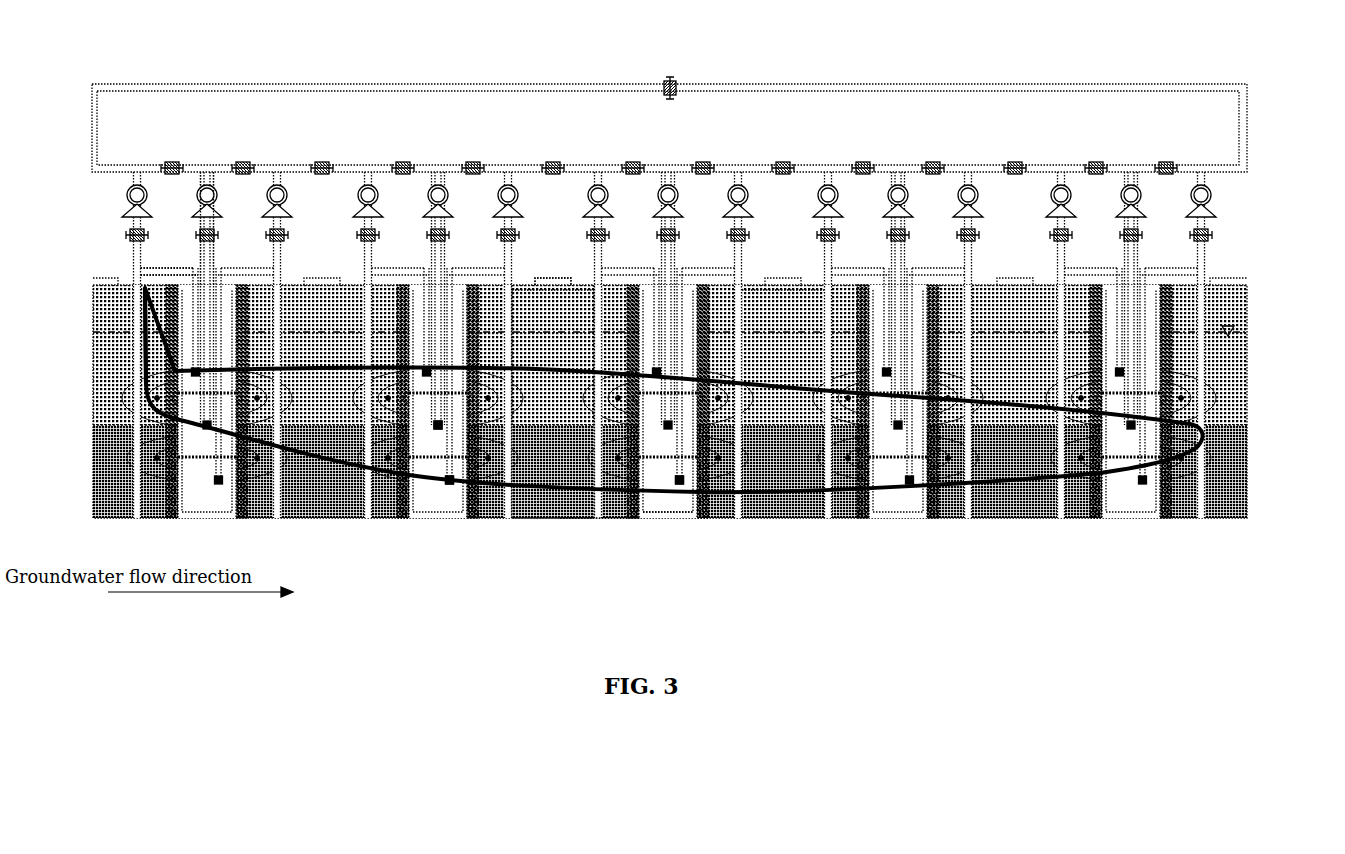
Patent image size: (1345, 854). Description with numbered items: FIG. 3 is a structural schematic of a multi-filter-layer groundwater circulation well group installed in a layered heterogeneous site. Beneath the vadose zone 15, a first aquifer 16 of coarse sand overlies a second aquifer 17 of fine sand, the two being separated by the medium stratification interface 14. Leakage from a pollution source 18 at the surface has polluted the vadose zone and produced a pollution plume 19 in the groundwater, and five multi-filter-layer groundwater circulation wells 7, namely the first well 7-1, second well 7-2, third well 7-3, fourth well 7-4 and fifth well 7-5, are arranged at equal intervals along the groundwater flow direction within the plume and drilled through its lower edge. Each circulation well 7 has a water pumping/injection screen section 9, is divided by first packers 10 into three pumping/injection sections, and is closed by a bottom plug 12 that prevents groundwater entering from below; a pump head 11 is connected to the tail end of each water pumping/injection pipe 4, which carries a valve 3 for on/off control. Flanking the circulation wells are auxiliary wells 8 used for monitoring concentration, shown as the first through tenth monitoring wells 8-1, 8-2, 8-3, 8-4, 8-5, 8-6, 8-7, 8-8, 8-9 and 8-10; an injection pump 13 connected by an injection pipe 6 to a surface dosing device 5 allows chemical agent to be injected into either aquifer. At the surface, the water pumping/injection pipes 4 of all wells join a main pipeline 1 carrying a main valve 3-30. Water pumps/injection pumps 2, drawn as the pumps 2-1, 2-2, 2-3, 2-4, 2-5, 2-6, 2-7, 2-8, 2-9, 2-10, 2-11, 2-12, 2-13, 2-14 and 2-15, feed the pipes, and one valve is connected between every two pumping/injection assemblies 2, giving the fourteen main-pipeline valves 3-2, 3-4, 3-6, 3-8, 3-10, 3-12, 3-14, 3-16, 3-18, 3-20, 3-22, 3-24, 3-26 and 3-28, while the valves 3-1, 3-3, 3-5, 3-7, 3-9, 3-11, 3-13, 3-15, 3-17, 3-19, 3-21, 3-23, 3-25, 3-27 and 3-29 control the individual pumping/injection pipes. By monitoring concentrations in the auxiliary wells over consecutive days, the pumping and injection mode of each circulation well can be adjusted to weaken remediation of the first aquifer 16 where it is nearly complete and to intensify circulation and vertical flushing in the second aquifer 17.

The main pipeline 1 is at (452, 85).
The water pump/injection pump 2 is at (127, 197).
The valve 3 is at (132, 242).
The water pumping/injection pipe 4 is at (212, 258).
The dosing device 5 is at (557, 277).
The injection pipe 6 is at (585, 277).
The multi-filter-layer groundwater circulation well 7 is at (478, 302).
The auxiliary well 8 is at (763, 316).
The water pumping/injection screen section 9 is at (434, 437).
The first packer 10 is at (437, 481).
The pump head 11 is at (666, 473).
The bottom plug 12 is at (660, 522).
The injection pump 13 is at (600, 504).
The medium stratification interface 14 is at (1240, 428).
The vadose zone 15 is at (1245, 308).
The first aquifer 16 is at (1232, 378).
The second aquifer 17 is at (1232, 498).
The pollution source 18 is at (152, 267).
The pollution plume 19 is at (158, 348).
The pump 2-1 is at (154, 201).
The pump 2-2 is at (224, 201).
The pump 2-3 is at (294, 201).
The pump 2-4 is at (385, 201).
The pump 2-5 is at (455, 201).
The pump 2-6 is at (525, 201).
The pump 2-7 is at (615, 201).
The pump 2-8 is at (685, 201).
The pump 2-9 is at (755, 201).
The pump 2-10 is at (852, 201).
The pump 2-11 is at (922, 201).
The pump 2-12 is at (992, 201).
The pump 2-13 is at (1084, 201).
The pump 2-14 is at (1154, 201).
The pump 2-15 is at (1225, 201).
The first valve 3-1 is at (154, 236).
The second valve 3-2 is at (172, 151).
The third valve 3-3 is at (224, 236).
The fourth valve 3-4 is at (243, 151).
The fifth valve 3-5 is at (294, 236).
The sixth valve 3-6 is at (322, 151).
The valve 3-7 is at (385, 236).
The eighth valve 3-8 is at (403, 151).
The valve 3-9 is at (455, 236).
The tenth valve 3-10 is at (475, 151).
The valve 3-11 is at (532, 236).
The twelfth valve 3-12 is at (553, 151).
The valve 3-13 is at (619, 248).
The fourteenth valve 3-14 is at (634, 151).
The valve 3-15 is at (690, 248).
The sixteenth valve 3-16 is at (705, 151).
The valve 3-17 is at (762, 236).
The eighteenth valve 3-18 is at (785, 151).
The valve 3-19 is at (849, 248).
The twentieth valve 3-20 is at (865, 151).
The valve 3-21 is at (920, 248).
The valve 3-22 is at (937, 151).
The valve 3-23 is at (992, 236).
The valve 3-24 is at (1020, 151).
The valve 3-25 is at (1082, 248).
The valve 3-26 is at (1096, 151).
The valve 3-27 is at (1152, 248).
The valve 3-28 is at (1166, 151).
The valve 3-29 is at (1225, 236).
The main valve 3-30 is at (684, 74).
The first multi-filter-layer groundwater circulation well 7-1 is at (207, 360).
The second multi-filter-layer groundwater circulation well 7-2 is at (438, 360).
The third multi-filter-layer groundwater circulation well 7-3 is at (668, 361).
The fourth multi-filter-layer groundwater circulation well 7-4 is at (898, 360).
The fifth multi-filter-layer groundwater circulation well 7-5 is at (1131, 360).
The first monitoring well 8-1 is at (164, 358).
The second monitoring well 8-2 is at (257, 358).
The third monitoring well 8-3 is at (393, 358).
The fourth monitoring well 8-4 is at (486, 358).
The fifth monitoring well 8-5 is at (624, 358).
The sixth monitoring well 8-6 is at (716, 358).
The seventh monitoring well 8-7 is at (855, 358).
The eighth monitoring well 8-8 is at (947, 358).
The ninth monitoring well 8-9 is at (1087, 358).
The tenth monitoring well 8-10 is at (1182, 358).